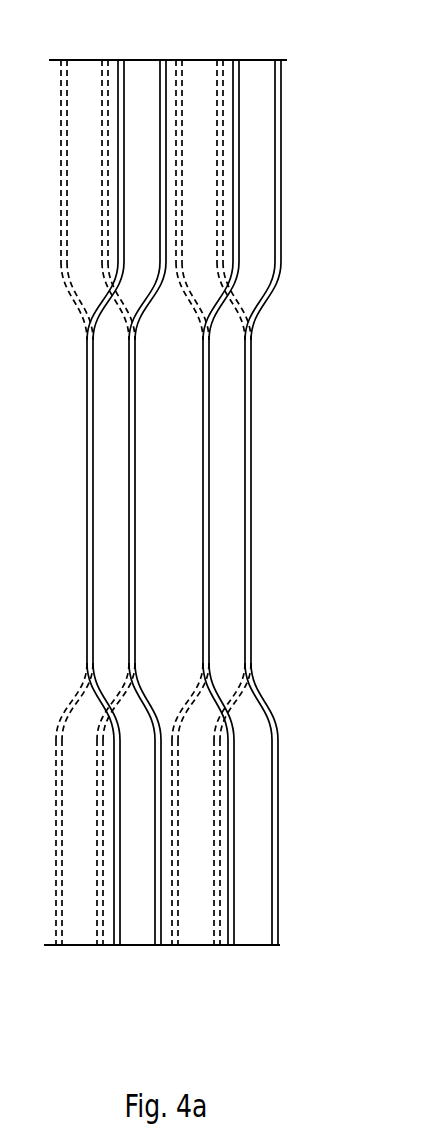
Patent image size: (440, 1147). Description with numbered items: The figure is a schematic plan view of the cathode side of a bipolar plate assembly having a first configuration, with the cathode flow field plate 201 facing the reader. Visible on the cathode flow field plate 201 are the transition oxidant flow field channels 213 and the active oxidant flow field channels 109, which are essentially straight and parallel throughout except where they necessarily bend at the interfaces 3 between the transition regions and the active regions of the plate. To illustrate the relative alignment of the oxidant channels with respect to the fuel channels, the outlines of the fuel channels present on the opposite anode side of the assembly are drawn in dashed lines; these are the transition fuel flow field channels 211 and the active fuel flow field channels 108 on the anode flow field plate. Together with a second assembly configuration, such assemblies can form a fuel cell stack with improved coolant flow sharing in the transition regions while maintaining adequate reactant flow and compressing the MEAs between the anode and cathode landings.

The cathode flow field plate 201 is at (308, 912).
The transition fuel flow field channels 211 is at (82, 72).
The transition oxidant flow field channels 213 is at (137, 932).
The interfaces 3 is at (311, 321).
The active fuel flow field channels 108 is at (135, 457).
The active oxidant flow field channels 109 is at (113, 514).